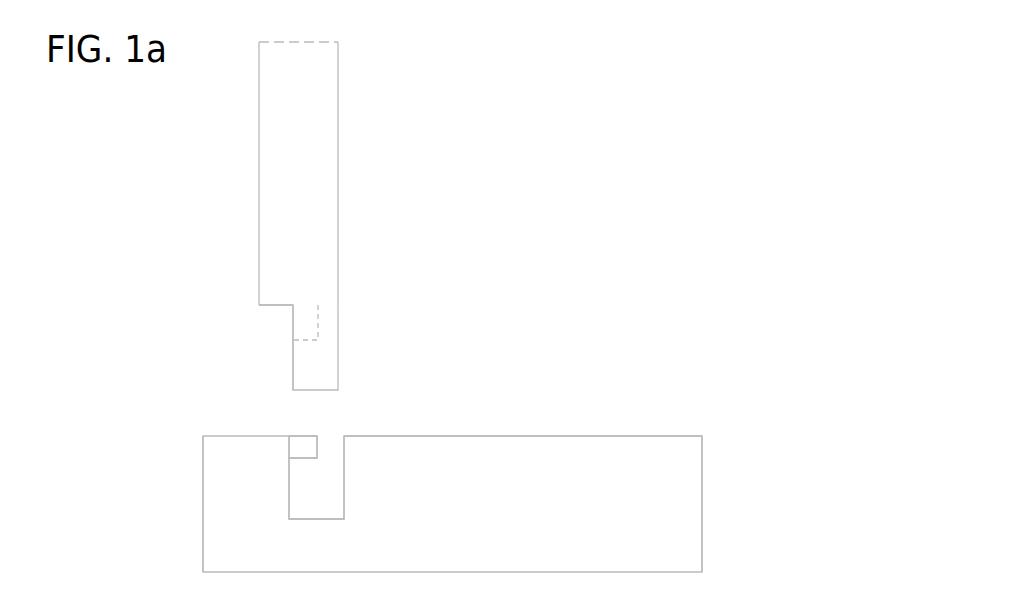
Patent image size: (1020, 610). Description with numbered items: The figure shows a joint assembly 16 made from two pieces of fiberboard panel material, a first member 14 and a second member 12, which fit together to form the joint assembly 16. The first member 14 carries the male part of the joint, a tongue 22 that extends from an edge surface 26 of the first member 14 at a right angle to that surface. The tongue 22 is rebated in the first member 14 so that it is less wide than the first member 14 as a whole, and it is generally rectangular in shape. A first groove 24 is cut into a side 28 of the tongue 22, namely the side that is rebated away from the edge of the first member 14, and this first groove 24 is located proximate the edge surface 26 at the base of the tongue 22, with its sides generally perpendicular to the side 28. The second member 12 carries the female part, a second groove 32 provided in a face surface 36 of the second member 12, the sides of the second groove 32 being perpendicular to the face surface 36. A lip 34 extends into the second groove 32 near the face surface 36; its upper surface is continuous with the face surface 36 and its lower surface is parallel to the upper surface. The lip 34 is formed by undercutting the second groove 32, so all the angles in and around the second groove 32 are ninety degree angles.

The second member 12 is at (577, 477).
The first member 14 is at (318, 89).
The joint assembly 16 is at (637, 163).
The tongue 22 is at (340, 347).
The first groove 24 is at (289, 324).
The edge surface 26 is at (276, 304).
The side of the tongue 28 is at (296, 357).
The second groove 32 is at (330, 445).
The lip 34 is at (306, 437).
The face surface 36 is at (520, 436).